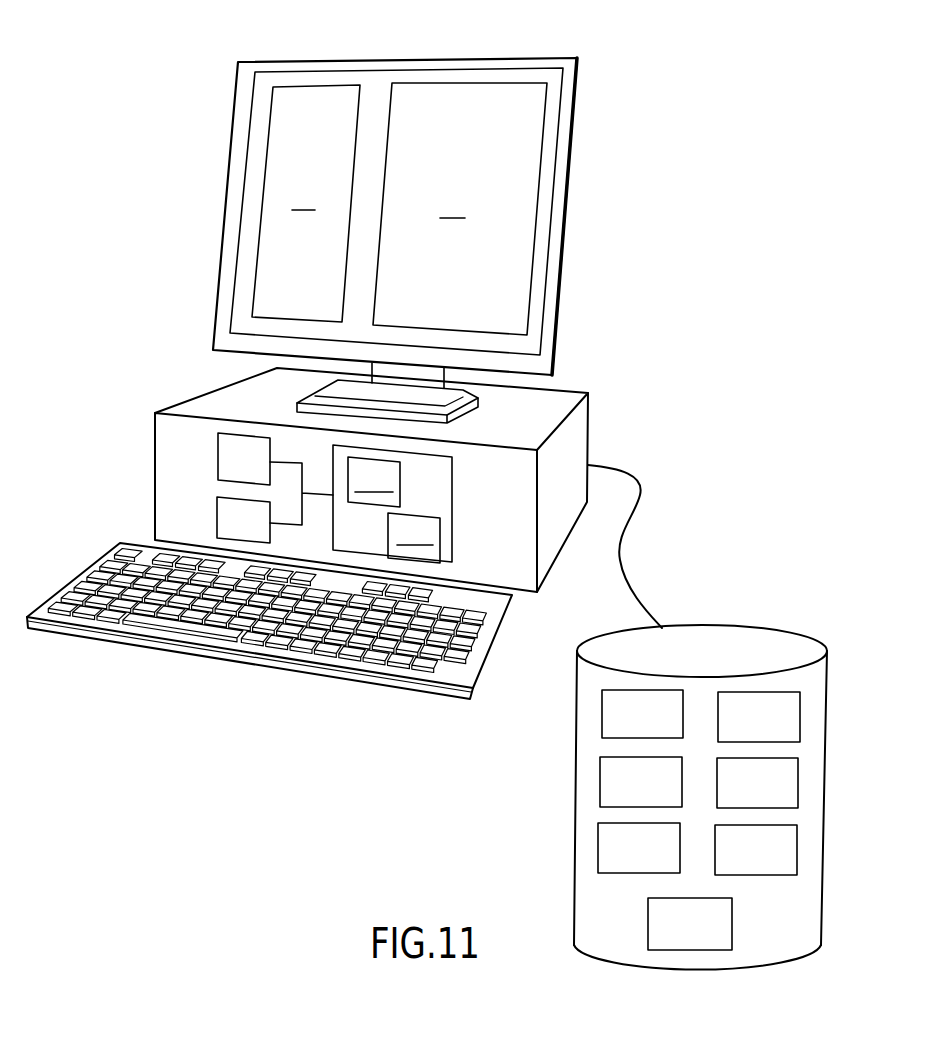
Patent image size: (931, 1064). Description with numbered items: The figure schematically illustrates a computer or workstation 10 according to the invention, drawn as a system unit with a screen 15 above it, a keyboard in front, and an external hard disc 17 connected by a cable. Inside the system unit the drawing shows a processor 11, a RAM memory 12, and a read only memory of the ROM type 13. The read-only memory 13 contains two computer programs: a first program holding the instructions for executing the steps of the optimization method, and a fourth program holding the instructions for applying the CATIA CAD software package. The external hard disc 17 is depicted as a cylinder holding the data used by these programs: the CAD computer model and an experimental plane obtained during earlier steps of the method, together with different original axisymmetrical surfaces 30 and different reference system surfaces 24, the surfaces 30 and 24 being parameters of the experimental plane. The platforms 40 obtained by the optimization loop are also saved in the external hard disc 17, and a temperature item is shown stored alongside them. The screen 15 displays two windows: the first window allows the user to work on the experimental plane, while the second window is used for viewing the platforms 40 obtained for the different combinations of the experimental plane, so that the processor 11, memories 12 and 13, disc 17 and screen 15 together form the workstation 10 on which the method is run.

The computer 10 is at (342, 480).
The processor 11 is at (254, 468).
The RAM memory 12 is at (254, 528).
The read only memory 13 is at (452, 502).
The screen 15 is at (567, 193).
The external hard disc 17 is at (700, 830).
The original axisymmetrical surfaces 30 is at (641, 748).
The reference system surfaces 24 is at (758, 750).
The platforms 40 is at (690, 924).